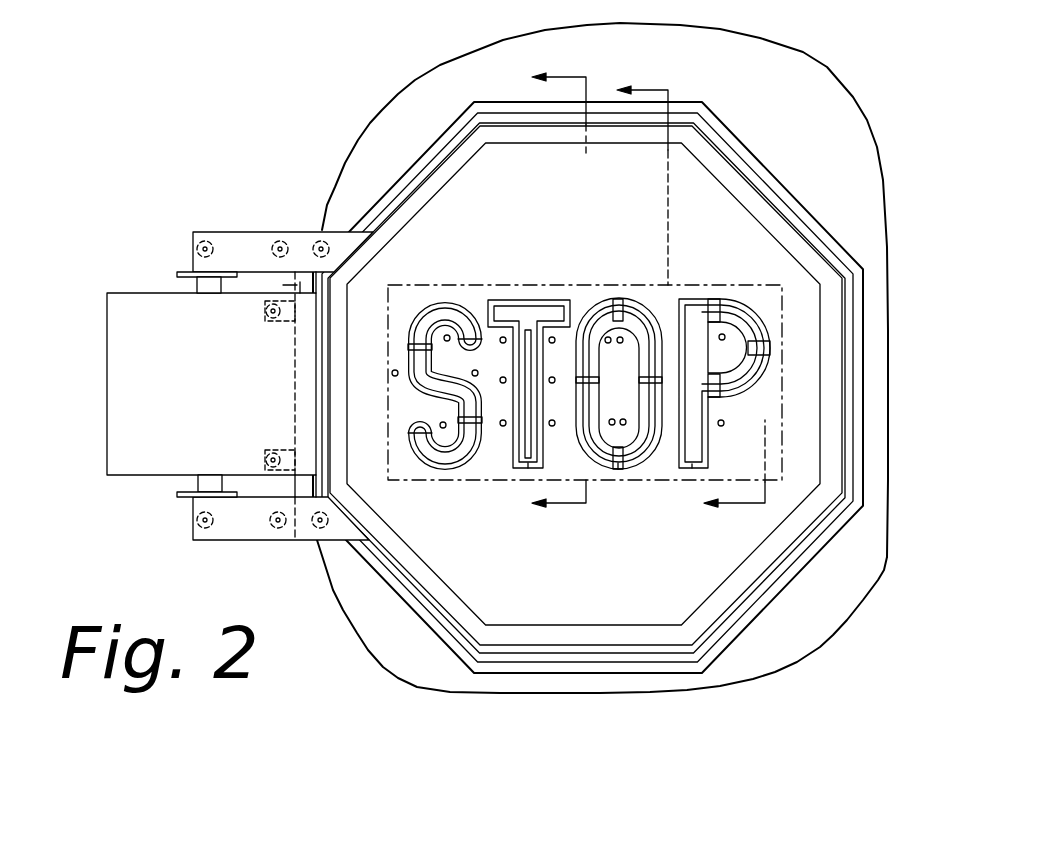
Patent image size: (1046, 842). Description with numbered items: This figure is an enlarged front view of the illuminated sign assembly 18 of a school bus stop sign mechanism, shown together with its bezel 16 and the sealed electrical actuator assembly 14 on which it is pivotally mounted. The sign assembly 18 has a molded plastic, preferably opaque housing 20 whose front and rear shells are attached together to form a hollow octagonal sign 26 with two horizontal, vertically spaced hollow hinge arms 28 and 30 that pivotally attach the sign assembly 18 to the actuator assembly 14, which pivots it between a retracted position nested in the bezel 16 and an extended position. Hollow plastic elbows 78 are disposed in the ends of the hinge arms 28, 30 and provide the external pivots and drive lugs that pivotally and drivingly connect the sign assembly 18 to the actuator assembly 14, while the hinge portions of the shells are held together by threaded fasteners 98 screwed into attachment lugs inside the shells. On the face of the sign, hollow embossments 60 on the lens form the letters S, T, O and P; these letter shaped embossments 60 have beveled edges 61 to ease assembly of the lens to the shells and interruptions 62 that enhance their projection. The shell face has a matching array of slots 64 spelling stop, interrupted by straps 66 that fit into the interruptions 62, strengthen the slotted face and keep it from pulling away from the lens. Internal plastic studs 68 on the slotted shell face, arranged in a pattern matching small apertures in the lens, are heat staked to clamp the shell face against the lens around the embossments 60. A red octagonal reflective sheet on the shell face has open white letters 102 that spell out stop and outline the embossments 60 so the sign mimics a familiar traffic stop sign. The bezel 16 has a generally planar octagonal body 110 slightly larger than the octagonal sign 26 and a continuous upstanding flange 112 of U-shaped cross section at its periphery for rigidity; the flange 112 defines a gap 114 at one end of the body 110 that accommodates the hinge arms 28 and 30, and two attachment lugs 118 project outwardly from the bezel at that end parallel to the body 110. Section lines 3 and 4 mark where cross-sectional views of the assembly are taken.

The section line 3- 3 is at (544, 320).
The section line 4- 4 is at (585, 298).
The sealed electrical actuator assembly 14 is at (127, 380).
The bezel 16 is at (782, 187).
The illuminated sign assembly 18 is at (687, 600).
The housing 20 is at (602, 616).
The hollow octagonal sign 26 is at (497, 163).
The hinge arm 28 is at (223, 232).
The hinge arm 30 is at (250, 540).
The hollow embossments 60 is at (449, 313).
The beveled edges 61 is at (438, 447).
The interruptions 62 is at (410, 345).
The slots 64 is at (424, 312).
The straps 66 is at (616, 311).
The plastic studs 68 is at (752, 318).
The plastic elbows 78 is at (197, 280).
The threaded fasteners 98 is at (205, 240).
The open white letters 102 is at (739, 299).
The generally planar body 110 is at (283, 285).
The upstanding flange 112 is at (740, 112).
The gap 114 is at (295, 376).
The attachment lugs 118 is at (266, 314).